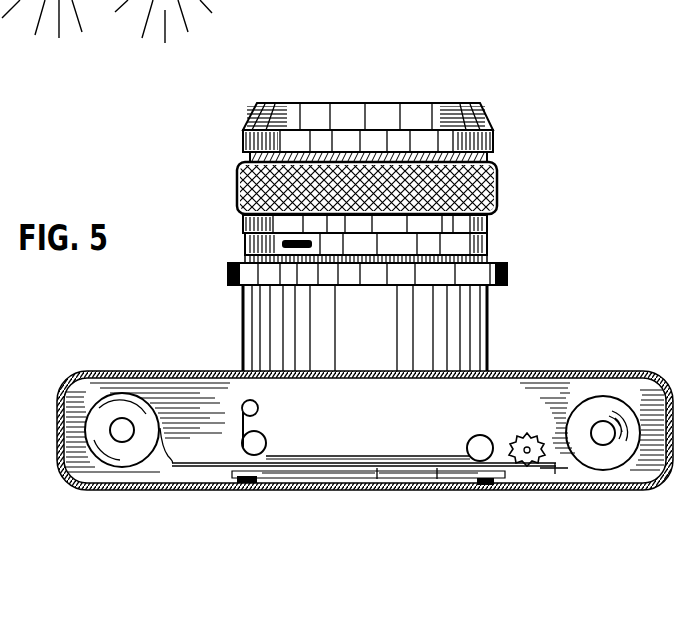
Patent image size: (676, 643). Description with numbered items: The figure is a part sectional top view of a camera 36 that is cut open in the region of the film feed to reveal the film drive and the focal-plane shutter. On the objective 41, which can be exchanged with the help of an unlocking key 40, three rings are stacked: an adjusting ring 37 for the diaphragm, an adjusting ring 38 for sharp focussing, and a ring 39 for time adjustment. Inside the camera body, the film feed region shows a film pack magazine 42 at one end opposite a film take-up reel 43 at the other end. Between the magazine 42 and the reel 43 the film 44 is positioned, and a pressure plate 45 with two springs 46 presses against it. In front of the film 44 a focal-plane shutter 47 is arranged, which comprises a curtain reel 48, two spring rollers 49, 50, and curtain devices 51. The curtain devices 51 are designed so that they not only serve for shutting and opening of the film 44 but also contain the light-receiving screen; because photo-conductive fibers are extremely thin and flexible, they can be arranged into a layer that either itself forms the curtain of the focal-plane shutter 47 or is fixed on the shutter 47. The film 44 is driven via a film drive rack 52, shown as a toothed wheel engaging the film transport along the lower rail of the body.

The camera 36 is at (301, 84).
The adjusting ring for the diaphragm 37 is at (494, 140).
The adjusting ring for sharp focussing 38 is at (498, 193).
The ring for time adjustment 39 is at (507, 278).
The unlocking key 40 is at (244, 243).
The objective 41 is at (416, 103).
The film pack magazine 42 is at (124, 458).
The film take-up reel 43 is at (607, 466).
The film 44 is at (377, 481).
The pressure plate 45 is at (438, 482).
The springs 46 is at (253, 484).
The focal-plane shutter 47 is at (353, 455).
The curtain reel 48 is at (477, 445).
The spring roller 49 is at (247, 401).
The spring roller 50 is at (246, 444).
The curtain devices 51 is at (298, 457).
The film drive rack 52 is at (525, 436).